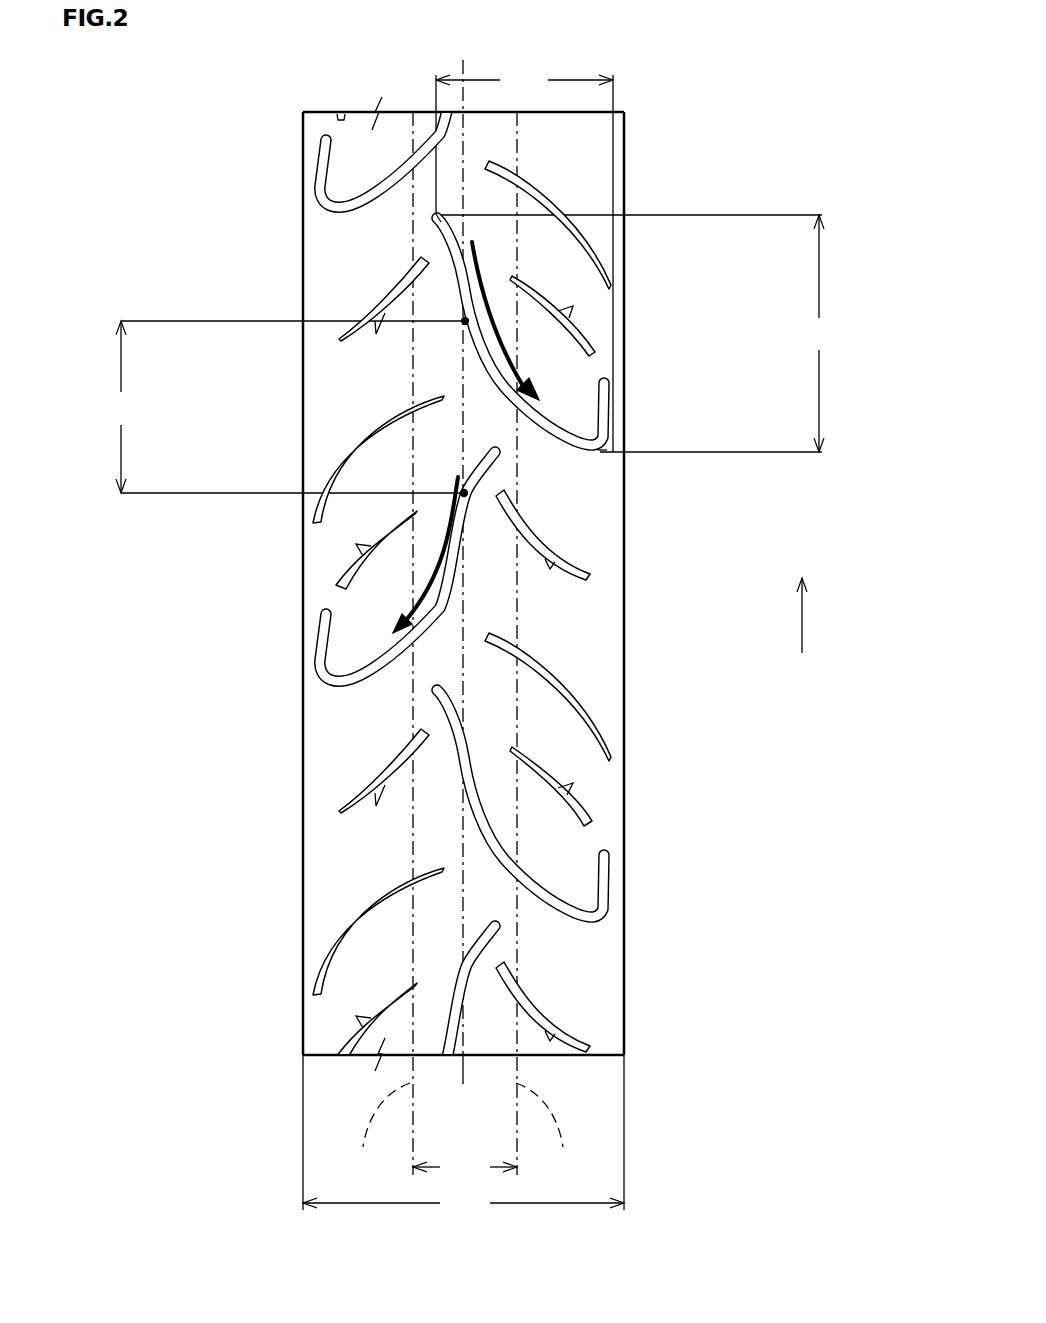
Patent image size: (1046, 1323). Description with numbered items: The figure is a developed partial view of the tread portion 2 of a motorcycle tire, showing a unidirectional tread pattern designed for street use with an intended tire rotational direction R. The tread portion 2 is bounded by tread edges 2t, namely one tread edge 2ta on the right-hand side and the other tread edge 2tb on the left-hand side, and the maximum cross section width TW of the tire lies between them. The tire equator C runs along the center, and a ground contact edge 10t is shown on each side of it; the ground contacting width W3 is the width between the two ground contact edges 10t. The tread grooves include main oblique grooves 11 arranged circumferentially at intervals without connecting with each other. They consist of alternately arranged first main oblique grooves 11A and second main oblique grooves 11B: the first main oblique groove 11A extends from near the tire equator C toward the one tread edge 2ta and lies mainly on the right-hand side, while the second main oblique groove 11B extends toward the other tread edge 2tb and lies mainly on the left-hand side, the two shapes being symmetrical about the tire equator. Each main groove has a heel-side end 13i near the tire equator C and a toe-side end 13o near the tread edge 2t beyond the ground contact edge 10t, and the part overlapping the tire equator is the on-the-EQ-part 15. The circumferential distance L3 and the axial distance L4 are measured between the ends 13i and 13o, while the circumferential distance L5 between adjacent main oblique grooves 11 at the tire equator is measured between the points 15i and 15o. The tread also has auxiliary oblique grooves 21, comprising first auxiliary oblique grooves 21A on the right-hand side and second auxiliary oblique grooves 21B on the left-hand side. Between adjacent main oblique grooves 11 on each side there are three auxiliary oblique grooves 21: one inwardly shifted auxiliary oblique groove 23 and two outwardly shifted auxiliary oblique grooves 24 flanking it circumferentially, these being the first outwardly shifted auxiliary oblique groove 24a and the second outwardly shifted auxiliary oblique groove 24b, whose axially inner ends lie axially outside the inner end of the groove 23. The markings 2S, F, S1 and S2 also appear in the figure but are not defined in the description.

The tread portion 2 is at (465, 557).
The tread surface 2S is at (657, 98).
The tread edges 2t is at (465, 583).
The one tread edge 2ta is at (627, 899).
The other tread edge 2tb is at (301, 994).
The ground contact edge 10t is at (464, 1130).
The main oblique grooves 11 is at (98, 724).
The first main oblique groove 11A is at (553, 432).
The second main oblique groove 11B is at (400, 162).
The heel-side end 13i is at (428, 215).
The toe-side end 13o is at (613, 451).
The on-the-EQ-part 15 is at (480, 287).
The point on the tire equator 15o is at (463, 322).
The point on the tire equator 15i is at (466, 494).
The auxiliary oblique grooves 21 is at (465, 578).
The first auxiliary oblique grooves 21A is at (546, 186).
The second auxiliary oblique grooves 21B is at (369, 440).
The inwardly shifted auxiliary oblique groove 23 is at (465, 578).
The outwardly shifted auxiliary oblique groove 24 is at (476, 659).
The first outwardly shifted auxiliary oblique groove 24a is at (364, 555).
The second outwardly shifted auxiliary oblique groove 24b is at (387, 777).
The direction of water flow F is at (548, 368).
The intended tire rotational direction R is at (829, 614).
The tire equator C is at (464, 559).
The first tread half S1 is at (432, 61).
The second tread half S2 is at (397, 1245).
The circumferential distance L3 is at (635, 333).
The axial distance L4 is at (524, 260).
The circumferential distance between adjacent main oblique grooves L5 is at (285, 407).
The ground contacting width W3 is at (465, 1169).
The maximum cross section width TW is at (463, 1137).